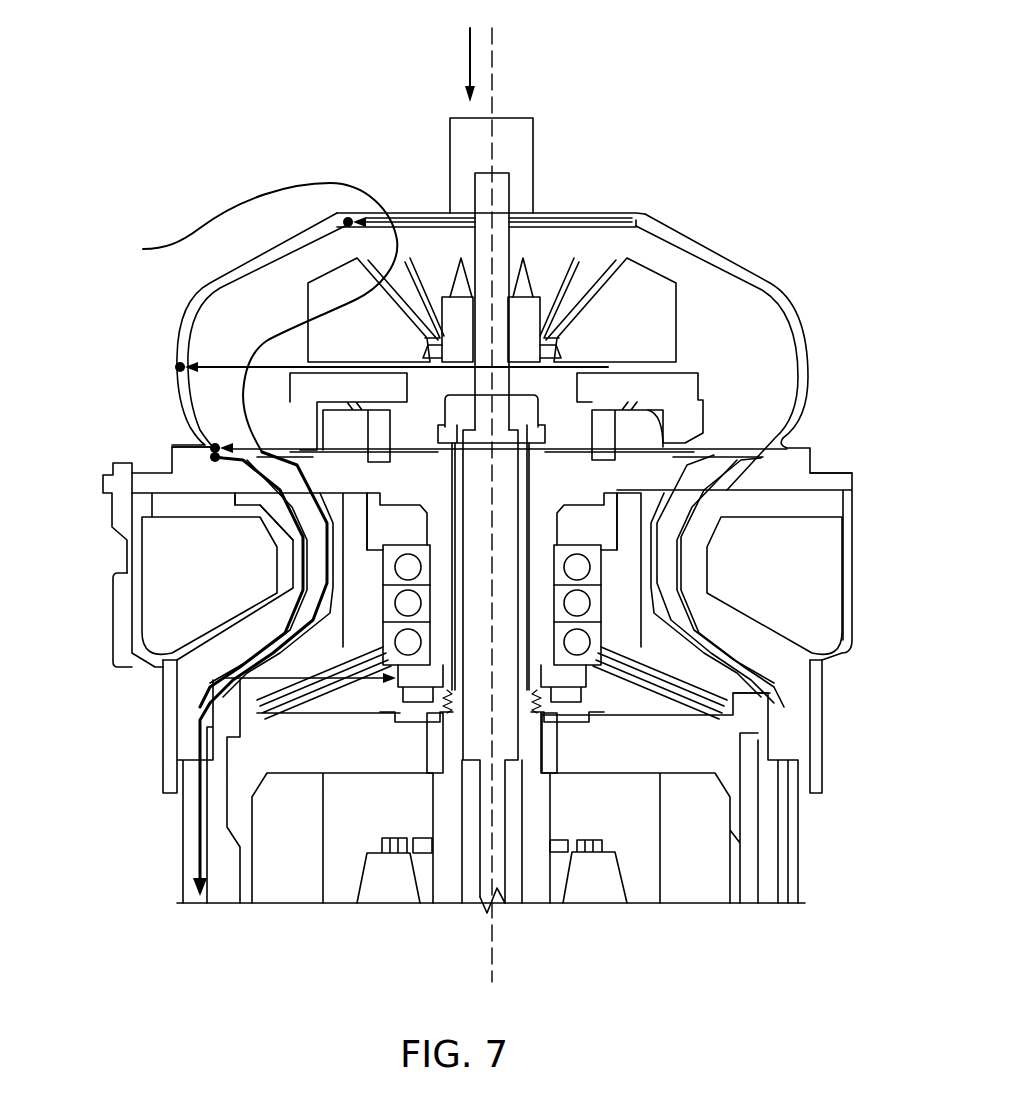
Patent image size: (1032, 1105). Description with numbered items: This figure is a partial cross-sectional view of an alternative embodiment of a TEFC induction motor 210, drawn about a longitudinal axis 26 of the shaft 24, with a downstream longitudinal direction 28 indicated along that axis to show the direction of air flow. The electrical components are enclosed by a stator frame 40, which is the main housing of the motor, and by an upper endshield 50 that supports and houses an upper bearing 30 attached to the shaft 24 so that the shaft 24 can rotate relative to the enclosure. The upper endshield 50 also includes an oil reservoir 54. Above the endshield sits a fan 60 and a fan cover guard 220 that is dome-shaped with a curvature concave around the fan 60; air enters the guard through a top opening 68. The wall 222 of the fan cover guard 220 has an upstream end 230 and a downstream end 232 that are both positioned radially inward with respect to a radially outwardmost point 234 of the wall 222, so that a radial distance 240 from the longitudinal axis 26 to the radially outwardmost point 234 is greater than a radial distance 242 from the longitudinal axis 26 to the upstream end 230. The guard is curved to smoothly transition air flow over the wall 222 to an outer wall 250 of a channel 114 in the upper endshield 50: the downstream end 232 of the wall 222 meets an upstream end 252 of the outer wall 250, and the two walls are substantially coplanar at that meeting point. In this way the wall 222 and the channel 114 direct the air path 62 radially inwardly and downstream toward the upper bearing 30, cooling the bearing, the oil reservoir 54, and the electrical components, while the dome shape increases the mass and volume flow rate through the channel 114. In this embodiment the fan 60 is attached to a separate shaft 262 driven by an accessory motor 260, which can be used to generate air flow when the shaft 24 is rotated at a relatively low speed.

The shaft 24 is at (527, 870).
The longitudinal axis 26 is at (512, 45).
The downstream longitudinal direction 28 is at (468, 62).
The upper bearing 30 is at (600, 576).
The stator frame 40 is at (157, 862).
The upper endshield 50 is at (52, 523).
The oil reservoir 54 is at (232, 588).
The fan 60 is at (593, 256).
The path 62 is at (181, 245).
The top opening 68 is at (581, 192).
The channel 114 is at (335, 632).
The TEFC induction motor 210 is at (863, 247).
The fan cover guard 220 is at (838, 333).
The wall 222 is at (176, 332).
The upstream end 230 is at (348, 216).
The downstream end 232 is at (211, 445).
The radially outwardmost point 234 is at (176, 368).
The radial distance 240 is at (226, 360).
The radial distance 242 is at (422, 212).
The outer wall 250 is at (263, 528).
The upstream end 252 is at (211, 458).
The accessory motor 260 is at (537, 117).
The shaft 262 is at (468, 240).